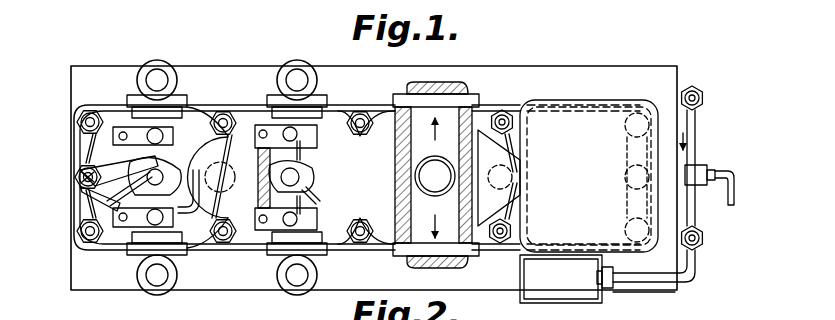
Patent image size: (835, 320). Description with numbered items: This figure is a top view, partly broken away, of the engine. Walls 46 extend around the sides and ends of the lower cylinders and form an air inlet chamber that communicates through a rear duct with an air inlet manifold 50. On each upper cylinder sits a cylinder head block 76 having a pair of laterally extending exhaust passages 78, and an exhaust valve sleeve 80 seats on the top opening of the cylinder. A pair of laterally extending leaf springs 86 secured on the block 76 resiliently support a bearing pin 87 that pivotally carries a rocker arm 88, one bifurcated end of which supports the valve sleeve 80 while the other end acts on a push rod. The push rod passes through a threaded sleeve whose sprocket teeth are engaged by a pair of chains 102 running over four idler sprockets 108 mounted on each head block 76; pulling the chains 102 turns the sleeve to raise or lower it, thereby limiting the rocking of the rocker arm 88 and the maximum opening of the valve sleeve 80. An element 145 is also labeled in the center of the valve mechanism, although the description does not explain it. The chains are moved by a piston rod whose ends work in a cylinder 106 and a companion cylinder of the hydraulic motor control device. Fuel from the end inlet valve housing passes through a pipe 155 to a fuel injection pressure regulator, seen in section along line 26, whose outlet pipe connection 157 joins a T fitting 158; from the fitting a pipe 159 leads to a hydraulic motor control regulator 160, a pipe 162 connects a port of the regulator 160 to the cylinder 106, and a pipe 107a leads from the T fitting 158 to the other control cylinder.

The section line 26 is at (693, 78).
The walls 46 is at (567, 67).
The air inlet manifold 50 is at (77, 152).
The cylinder head block 76 is at (380, 170).
The exhaust passages 78 is at (424, 112).
The exhaust valve sleeve 80 is at (416, 188).
The leaf springs 86 is at (248, 140).
The bearing pin 87 is at (222, 150).
The rocker arm 88 is at (538, 168).
The chains 102 is at (80, 198).
The cylinder 106 is at (580, 280).
The pipe 107a is at (736, 180).
The idler sprockets 108 is at (75, 119).
The push rod 145 is at (303, 177).
The pipe 155 is at (686, 88).
The outlet pipe connection 157 is at (700, 156).
The T fitting 158 is at (703, 192).
The pipe 159 is at (706, 226).
The hydraulic motor control regulator 160 is at (703, 250).
The pipe 162 is at (694, 281).